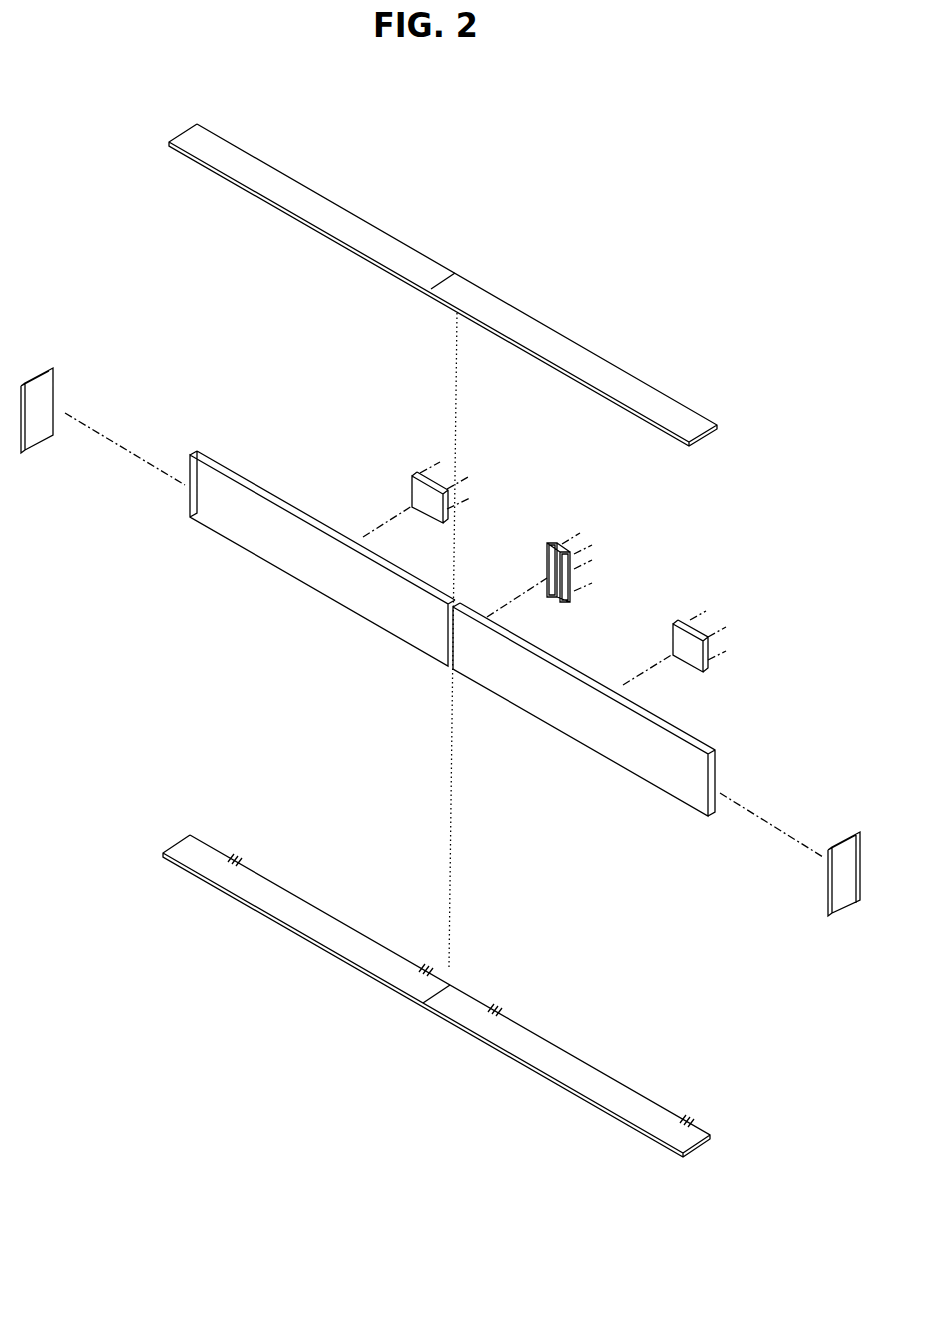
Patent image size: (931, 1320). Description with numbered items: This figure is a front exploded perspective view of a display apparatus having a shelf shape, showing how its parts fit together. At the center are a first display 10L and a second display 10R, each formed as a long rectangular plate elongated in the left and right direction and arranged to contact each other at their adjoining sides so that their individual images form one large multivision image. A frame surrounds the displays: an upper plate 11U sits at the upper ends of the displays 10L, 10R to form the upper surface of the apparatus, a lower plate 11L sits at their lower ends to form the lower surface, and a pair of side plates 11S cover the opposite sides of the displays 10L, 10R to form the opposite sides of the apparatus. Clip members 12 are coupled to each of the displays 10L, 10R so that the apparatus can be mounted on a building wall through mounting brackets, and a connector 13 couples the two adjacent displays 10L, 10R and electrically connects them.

The upper plate 11U is at (397, 238).
The lower plate 11L is at (480, 1038).
The side plates 11S is at (55, 375).
The first display 10L is at (336, 572).
The second display 10R is at (584, 720).
The clip member 12 is at (411, 484).
The connector 13 is at (573, 606).